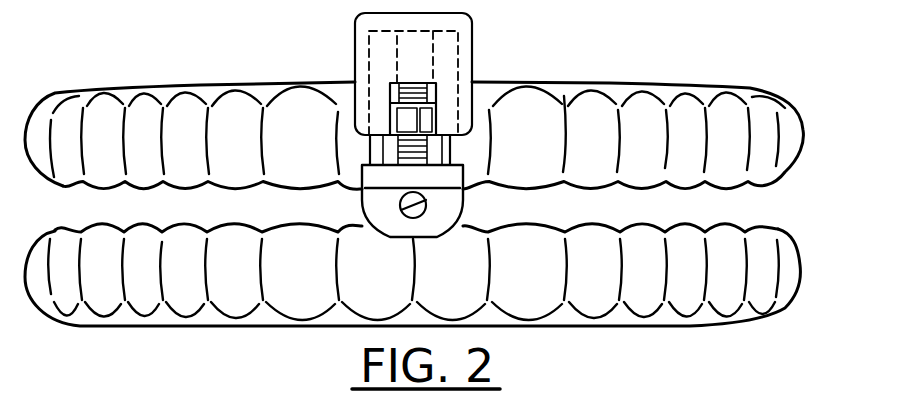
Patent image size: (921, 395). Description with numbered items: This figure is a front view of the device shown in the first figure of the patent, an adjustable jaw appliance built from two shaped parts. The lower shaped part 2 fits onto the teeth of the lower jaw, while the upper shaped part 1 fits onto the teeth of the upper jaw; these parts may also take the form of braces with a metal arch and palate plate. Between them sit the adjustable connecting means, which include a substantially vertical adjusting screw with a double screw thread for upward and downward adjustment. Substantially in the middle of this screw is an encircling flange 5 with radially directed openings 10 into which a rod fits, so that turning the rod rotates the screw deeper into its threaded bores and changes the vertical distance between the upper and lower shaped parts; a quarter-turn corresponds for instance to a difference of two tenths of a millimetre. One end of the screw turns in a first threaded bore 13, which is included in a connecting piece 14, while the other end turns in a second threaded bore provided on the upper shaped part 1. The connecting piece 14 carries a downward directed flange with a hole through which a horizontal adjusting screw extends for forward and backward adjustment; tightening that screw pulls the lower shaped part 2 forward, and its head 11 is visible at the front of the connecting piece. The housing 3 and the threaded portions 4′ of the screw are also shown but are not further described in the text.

The upper shaped part 1 is at (788, 105).
The lower shaped part 2 is at (783, 257).
The housing 3 is at (463, 22).
The first threaded bore 13 is at (400, 57).
The lower threaded portion 4′ is at (405, 147).
The encircling flange 5 is at (455, 113).
The radially directed openings 10 is at (437, 130).
The connecting piece 14 is at (397, 180).
The head 11 is at (427, 207).